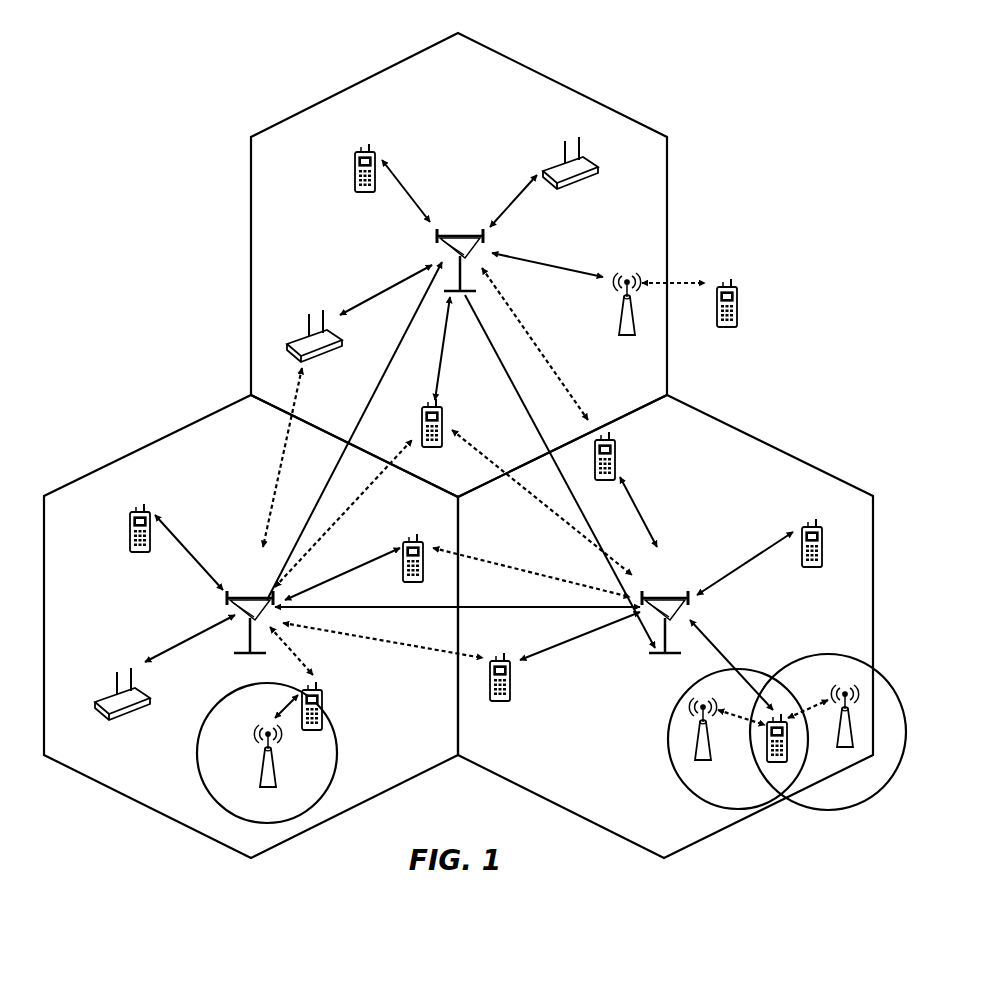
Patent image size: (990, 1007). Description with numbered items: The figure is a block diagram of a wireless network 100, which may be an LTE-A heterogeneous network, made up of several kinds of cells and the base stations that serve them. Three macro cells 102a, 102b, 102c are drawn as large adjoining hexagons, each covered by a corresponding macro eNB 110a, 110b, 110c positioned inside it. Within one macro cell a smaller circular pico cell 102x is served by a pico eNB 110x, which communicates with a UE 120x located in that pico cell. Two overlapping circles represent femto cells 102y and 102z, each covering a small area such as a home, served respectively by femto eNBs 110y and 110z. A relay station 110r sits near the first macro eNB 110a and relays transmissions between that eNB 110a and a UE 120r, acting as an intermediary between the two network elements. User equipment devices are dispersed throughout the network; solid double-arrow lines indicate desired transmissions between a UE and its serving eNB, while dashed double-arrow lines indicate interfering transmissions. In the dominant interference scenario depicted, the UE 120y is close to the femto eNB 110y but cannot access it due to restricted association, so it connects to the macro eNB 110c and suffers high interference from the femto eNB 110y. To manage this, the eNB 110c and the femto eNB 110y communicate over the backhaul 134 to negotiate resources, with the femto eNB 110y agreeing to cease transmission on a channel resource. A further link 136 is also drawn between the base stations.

The wireless network 100 is at (803, 102).
The macro cell 102a is at (563, 83).
The macro cell 102b is at (150, 443).
The macro cell 102c is at (770, 443).
The pico cell 102x is at (222, 699).
The femto cell 102y is at (676, 704).
The femto cell 102z is at (820, 650).
The macro eNB 110a is at (452, 233).
The macro eNB 110b is at (254, 592).
The macro eNB 110c is at (660, 592).
The relay station 110r is at (615, 318).
The pico eNB 110x is at (276, 778).
The femto eNB 110y is at (712, 752).
The femto eNB 110z is at (853, 738).
The UE 120r is at (739, 323).
The UE 120x is at (323, 702).
The UE 120y is at (768, 763).
The backhaul 134 is at (357, 425).
The wireless backhaul link 136 is at (525, 423).